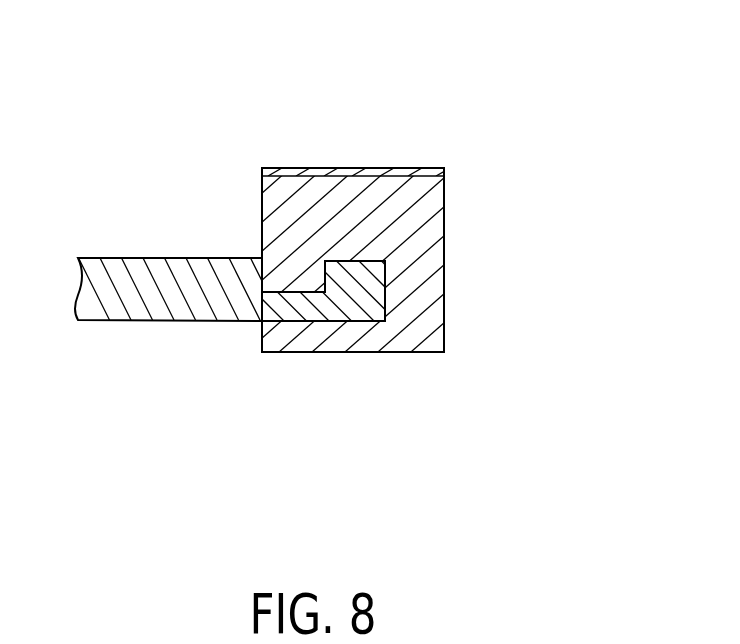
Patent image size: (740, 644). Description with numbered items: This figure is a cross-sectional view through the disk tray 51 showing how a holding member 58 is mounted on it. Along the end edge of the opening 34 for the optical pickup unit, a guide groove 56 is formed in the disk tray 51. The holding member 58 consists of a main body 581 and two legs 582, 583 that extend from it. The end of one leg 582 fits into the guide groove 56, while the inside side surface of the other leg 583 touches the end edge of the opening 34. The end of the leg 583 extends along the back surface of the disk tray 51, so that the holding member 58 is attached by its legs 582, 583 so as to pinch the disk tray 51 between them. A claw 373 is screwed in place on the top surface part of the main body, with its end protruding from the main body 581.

The opening 34 is at (588, 121).
The disk tray 51 is at (133, 257).
The guide groove 56 is at (266, 322).
The holding member 58 is at (405, 170).
The claw 373 is at (285, 170).
The main body 581 is at (437, 250).
The leg 582 is at (268, 263).
The leg 583 is at (317, 332).